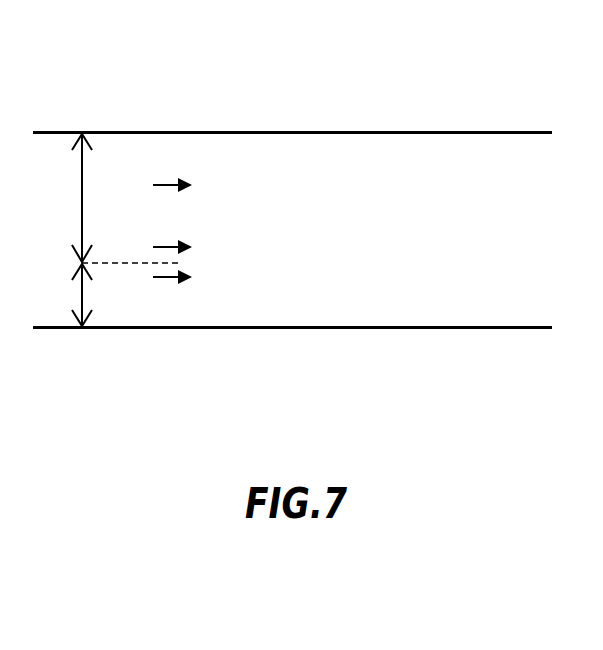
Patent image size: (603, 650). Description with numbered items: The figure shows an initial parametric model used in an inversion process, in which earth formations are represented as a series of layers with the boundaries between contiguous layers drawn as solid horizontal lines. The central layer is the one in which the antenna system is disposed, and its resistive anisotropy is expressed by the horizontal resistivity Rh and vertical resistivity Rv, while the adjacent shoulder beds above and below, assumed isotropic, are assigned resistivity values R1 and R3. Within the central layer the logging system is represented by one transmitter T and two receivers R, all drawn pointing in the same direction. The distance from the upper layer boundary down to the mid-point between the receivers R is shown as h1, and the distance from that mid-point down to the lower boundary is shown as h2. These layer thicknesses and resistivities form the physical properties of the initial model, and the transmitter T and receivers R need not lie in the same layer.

The resistivity of upper adjacent layer R1 is at (296, 77).
The resistivity of lower adjacent layer R3 is at (296, 402).
The horizontal resistivity Rh is at (302, 244).
The vertical resistivity Rv is at (363, 244).
The transmitter T is at (188, 193).
The receivers R is at (188, 269).
The distance to upper layer boundary h1 is at (66, 198).
The distance to lower layer boundary h2 is at (64, 295).